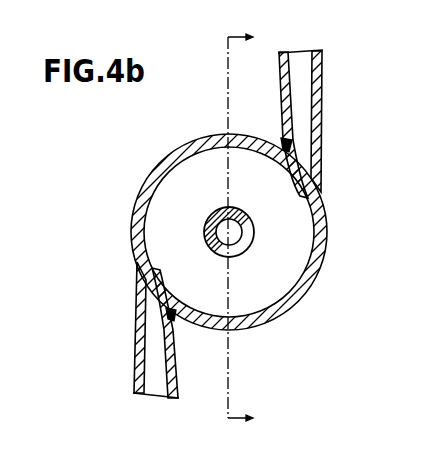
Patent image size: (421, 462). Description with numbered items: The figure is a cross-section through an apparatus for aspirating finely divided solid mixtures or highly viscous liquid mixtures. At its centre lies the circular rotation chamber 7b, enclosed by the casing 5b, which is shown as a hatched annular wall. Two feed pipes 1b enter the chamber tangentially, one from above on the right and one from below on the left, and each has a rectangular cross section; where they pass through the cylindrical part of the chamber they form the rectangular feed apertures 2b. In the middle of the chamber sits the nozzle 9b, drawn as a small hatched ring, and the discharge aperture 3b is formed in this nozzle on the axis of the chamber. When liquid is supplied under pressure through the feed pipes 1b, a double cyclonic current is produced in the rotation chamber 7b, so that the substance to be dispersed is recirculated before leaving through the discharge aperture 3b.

The feed pipe 1b is at (314, 108).
The feed aperture 2b is at (318, 192).
The discharge aperture 3b is at (230, 258).
The casing 5b is at (166, 170).
The rotation chamber 7b is at (305, 226).
The nozzle 9b is at (249, 222).